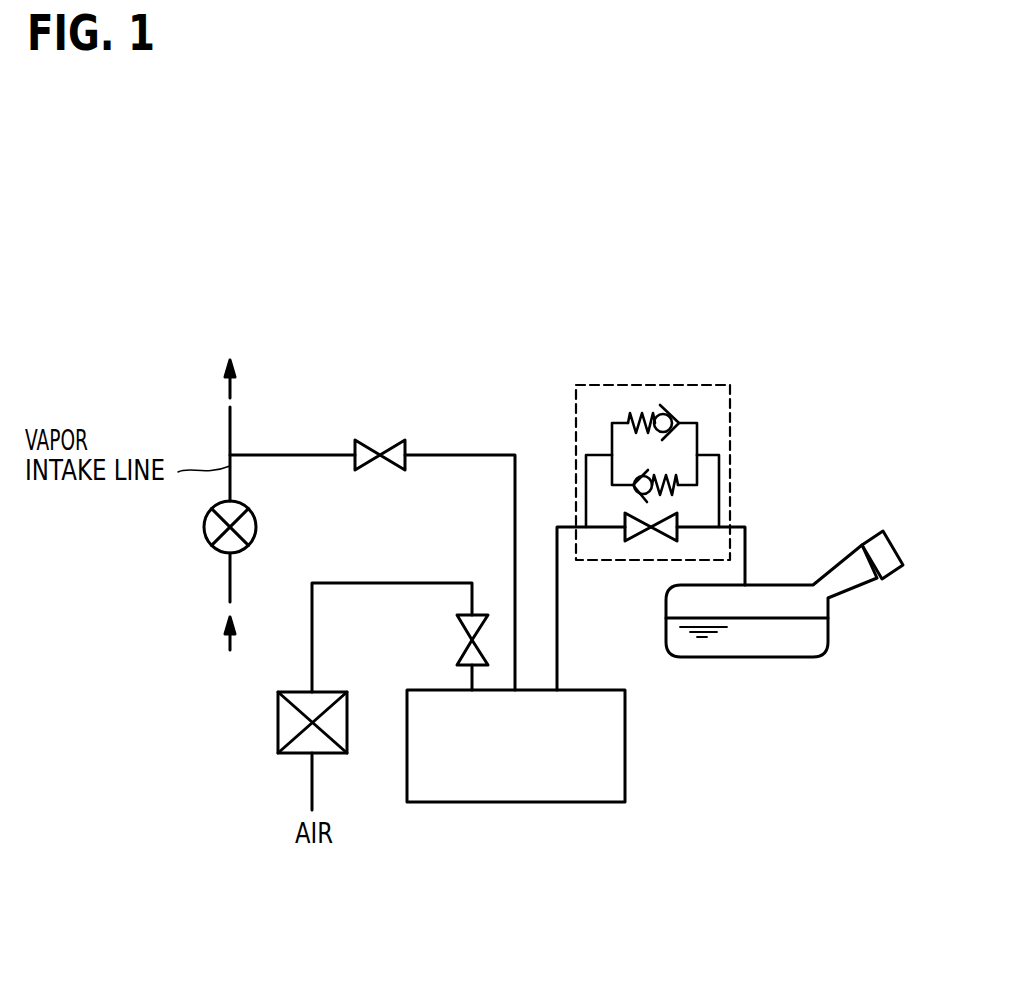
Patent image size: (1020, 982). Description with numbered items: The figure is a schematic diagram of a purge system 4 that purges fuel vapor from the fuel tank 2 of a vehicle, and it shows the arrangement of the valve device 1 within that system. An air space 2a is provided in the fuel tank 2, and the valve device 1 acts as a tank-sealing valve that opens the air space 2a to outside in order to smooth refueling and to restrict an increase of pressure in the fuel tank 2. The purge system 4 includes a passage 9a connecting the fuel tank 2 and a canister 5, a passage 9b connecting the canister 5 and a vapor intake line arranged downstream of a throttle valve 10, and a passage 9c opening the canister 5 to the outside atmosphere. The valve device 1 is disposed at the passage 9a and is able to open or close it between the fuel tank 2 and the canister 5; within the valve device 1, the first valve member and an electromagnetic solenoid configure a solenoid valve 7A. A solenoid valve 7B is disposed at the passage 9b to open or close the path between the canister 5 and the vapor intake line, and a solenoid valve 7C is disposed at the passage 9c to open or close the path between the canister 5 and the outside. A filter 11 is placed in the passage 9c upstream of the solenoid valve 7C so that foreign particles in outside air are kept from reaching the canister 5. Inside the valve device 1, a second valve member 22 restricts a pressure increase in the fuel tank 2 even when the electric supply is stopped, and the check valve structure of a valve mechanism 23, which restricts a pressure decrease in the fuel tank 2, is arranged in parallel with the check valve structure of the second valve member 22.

The valve device 1 is at (695, 440).
The fuel tank 2 is at (784, 640).
The air space 2a is at (778, 600).
The purge system 4 is at (198, 251).
The canister 5 is at (521, 788).
The solenoid valve 7A is at (632, 533).
The solenoid valve 7B is at (363, 452).
The solenoid valve 7C is at (470, 628).
The passage 9a is at (558, 625).
The passage 9b is at (463, 452).
The passage 9c is at (312, 653).
The throttle valve 10 is at (204, 530).
The filter 11 is at (292, 723).
The second valve member 22 is at (637, 478).
The valve mechanism 23 is at (716, 428).